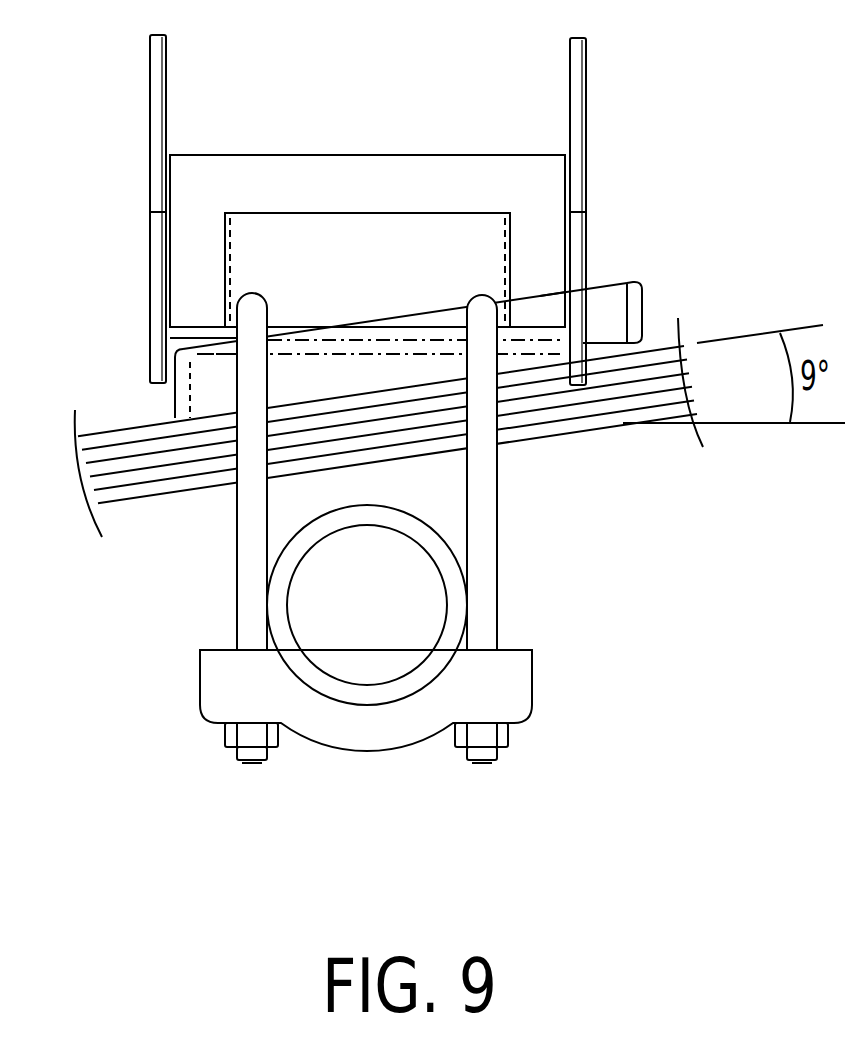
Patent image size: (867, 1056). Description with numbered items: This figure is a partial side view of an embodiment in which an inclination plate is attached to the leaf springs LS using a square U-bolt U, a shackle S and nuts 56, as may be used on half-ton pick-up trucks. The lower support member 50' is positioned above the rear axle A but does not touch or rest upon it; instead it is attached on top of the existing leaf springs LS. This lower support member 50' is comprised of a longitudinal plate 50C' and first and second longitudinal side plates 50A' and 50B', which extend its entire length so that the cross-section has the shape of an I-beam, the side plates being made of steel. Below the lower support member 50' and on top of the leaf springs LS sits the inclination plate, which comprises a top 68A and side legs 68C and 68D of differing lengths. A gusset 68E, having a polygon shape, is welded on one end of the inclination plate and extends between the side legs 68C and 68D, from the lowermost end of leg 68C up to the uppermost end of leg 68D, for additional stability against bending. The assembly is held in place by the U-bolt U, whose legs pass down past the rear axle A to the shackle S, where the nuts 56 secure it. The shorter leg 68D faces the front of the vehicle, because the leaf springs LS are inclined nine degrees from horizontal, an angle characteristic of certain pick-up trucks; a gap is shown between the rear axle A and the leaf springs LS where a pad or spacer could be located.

The lower support member 50' is at (367, 192).
The first longitudinal side plate 50A' is at (640, 211).
The second longitudinal side plate 50B' is at (96, 209).
The longitudinal plate 50C' is at (155, 275).
The top of inclination plate 68A is at (340, 328).
The side leg of inclination plate 68C is at (175, 405).
The side leg of inclination plate 68D is at (643, 303).
The gusset 68E is at (553, 284).
The leaf springs LS is at (150, 503).
The U-bolt U is at (494, 523).
The rear axle A is at (380, 621).
The shackle S is at (378, 750).
The nuts 56 is at (245, 763).